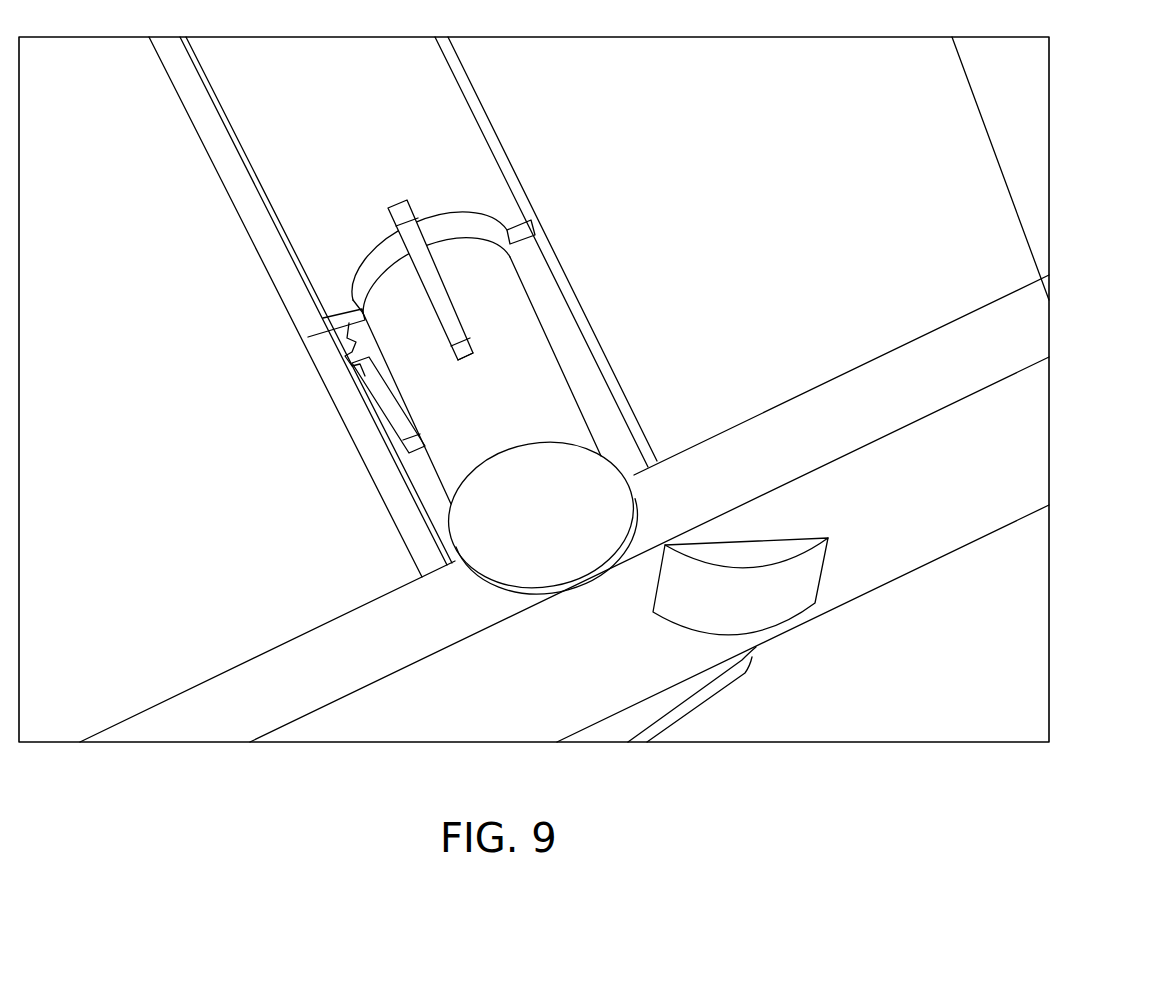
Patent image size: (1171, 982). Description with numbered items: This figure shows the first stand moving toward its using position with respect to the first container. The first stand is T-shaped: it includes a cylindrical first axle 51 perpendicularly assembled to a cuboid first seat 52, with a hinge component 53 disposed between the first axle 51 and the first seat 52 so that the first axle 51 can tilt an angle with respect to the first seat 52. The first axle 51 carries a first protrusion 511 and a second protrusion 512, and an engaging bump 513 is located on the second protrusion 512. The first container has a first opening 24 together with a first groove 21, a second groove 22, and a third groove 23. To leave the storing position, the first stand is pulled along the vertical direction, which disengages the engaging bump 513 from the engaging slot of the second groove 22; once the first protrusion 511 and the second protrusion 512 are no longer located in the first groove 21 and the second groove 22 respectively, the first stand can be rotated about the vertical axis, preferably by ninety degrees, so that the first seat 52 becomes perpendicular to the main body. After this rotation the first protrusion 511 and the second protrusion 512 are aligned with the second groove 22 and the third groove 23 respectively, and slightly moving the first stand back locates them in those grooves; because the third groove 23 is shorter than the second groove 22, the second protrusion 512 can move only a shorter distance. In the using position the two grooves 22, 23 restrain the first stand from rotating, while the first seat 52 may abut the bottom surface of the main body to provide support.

The first groove 21 is at (513, 230).
The second groove 22 is at (396, 206).
The third groove 23 is at (333, 323).
The first opening 24 is at (302, 175).
The first axle 51 is at (520, 338).
The first protrusion 511 is at (445, 305).
The second protrusion 512 is at (398, 410).
The engaging bump 513 is at (358, 352).
The first seat 52 is at (952, 483).
The hinge component 53 is at (492, 552).